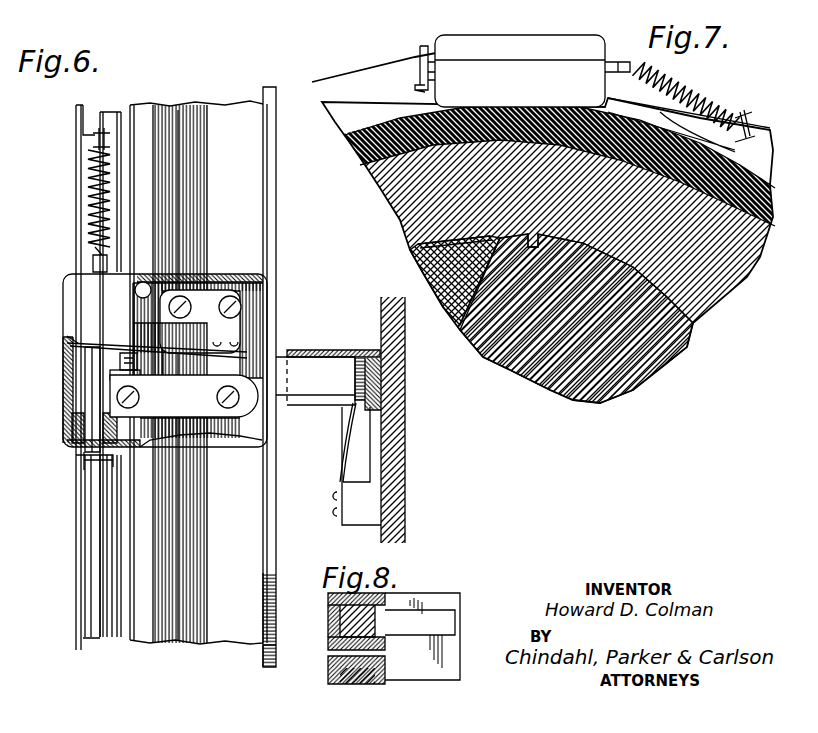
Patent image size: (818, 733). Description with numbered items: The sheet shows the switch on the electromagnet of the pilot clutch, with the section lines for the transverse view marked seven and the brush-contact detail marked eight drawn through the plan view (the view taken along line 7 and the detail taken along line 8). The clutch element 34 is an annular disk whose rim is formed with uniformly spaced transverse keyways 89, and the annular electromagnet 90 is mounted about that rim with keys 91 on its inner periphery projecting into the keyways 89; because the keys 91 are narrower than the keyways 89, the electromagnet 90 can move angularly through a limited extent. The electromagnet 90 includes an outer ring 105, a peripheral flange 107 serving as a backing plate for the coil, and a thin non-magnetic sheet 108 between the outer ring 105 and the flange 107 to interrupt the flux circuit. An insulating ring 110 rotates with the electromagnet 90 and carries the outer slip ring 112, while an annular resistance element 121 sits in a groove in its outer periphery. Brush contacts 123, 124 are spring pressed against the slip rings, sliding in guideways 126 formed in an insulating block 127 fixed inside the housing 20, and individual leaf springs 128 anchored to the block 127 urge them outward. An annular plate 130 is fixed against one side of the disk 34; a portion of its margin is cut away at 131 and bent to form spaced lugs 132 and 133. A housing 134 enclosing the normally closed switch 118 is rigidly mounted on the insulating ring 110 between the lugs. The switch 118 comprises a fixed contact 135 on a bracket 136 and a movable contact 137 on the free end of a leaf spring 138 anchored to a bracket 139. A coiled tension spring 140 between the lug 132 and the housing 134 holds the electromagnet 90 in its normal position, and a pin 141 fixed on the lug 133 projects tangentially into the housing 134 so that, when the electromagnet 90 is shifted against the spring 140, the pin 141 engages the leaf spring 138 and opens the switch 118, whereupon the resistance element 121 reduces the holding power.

In FIG. 6, the section line 7- 7 is at (110, 86).
In FIG. 6, the section line 8- 8 is at (340, 314).
In FIG. 6, the housing 20 is at (405, 456).
In FIG. 7, the clutch element 34 is at (662, 353).
In FIG. 7, the keyways 89 is at (470, 238).
In FIG. 7, the electromagnet 90 is at (390, 210).
In FIG. 7, the keys 91 is at (460, 323).
In FIG. 6, the outer ring 105 is at (110, 507).
In FIG. 6, the outer peripheral flange 107 is at (90, 562).
In FIG. 6, the thin sheet of non-magnetic material 108 is at (102, 539).
In FIG. 6, the insulating ring 110 is at (233, 108).
In FIG. 7, the insulating ring 110 is at (360, 150).
In FIG. 6, the outer slip ring 112 is at (263, 655).
In FIG. 6, the switch 118 is at (63, 372).
In FIG. 7, the switch 118 is at (581, 34).
In FIG. 6, the electrical resistance element 121 is at (196, 183).
In FIG. 6, the brush contact 123 is at (310, 386).
In FIG. 8, the brush contact 123 is at (338, 611).
In FIG. 8, the brush contact 124 is at (330, 672).
In FIG. 6, the guideways 126 is at (360, 379).
In FIG. 8, the guideways 126 is at (340, 641).
In FIG. 6, the insulating block 127 is at (355, 513).
In FIG. 8, the insulating block 127 is at (455, 620).
In FIG. 6, the leaf springs 128 is at (342, 466).
In FIG. 8, the leaf springs 128 is at (430, 678).
In FIG. 6, the annular plate 130 is at (80, 489).
In FIG. 6, the cut-away portion 131 is at (79, 226).
In FIG. 7, the cut-away portion 131 is at (660, 135).
In FIG. 6, the lug 132 is at (80, 140).
In FIG. 7, the lug 132 is at (752, 115).
In FIG. 6, the lug 133 is at (105, 457).
In FIG. 7, the lug 133 is at (426, 44).
In FIG. 6, the switch housing 134 is at (70, 295).
In FIG. 7, the switch housing 134 is at (540, 46).
In FIG. 6, the fixed contact 135 is at (140, 372).
In FIG. 6, the bracket 136 is at (210, 406).
In FIG. 6, the movable contact 137 is at (125, 350).
In FIG. 6, the leaf spring 138 is at (75, 350).
In FIG. 6, the bracket 139 is at (208, 300).
In FIG. 6, the coiled tension spring 140 is at (86, 180).
In FIG. 7, the coiled tension spring 140 is at (742, 74).
In FIG. 6, the pin 141 is at (90, 386).
In FIG. 7, the pin 141 is at (432, 68).